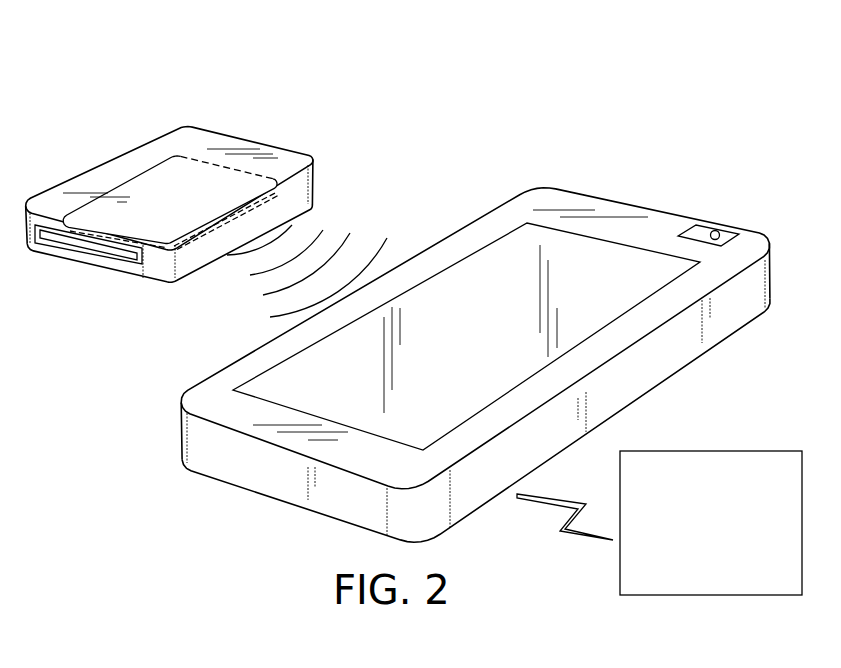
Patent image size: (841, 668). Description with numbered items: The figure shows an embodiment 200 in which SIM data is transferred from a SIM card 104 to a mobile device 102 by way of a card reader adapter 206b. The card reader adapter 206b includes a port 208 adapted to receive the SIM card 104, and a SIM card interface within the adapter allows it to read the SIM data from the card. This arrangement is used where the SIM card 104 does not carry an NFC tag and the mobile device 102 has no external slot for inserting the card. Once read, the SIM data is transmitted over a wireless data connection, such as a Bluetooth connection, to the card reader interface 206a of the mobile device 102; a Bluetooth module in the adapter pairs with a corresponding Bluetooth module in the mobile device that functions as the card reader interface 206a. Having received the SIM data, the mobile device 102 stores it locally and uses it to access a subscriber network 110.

The mobile device 102 is at (625, 203).
The SIM card 104 is at (150, 183).
The subscriber network 110 is at (692, 451).
The embodiment 200 is at (552, 143).
The card reader interface 206a is at (479, 217).
The card reader adapter 206b is at (252, 140).
The port 208 is at (88, 242).